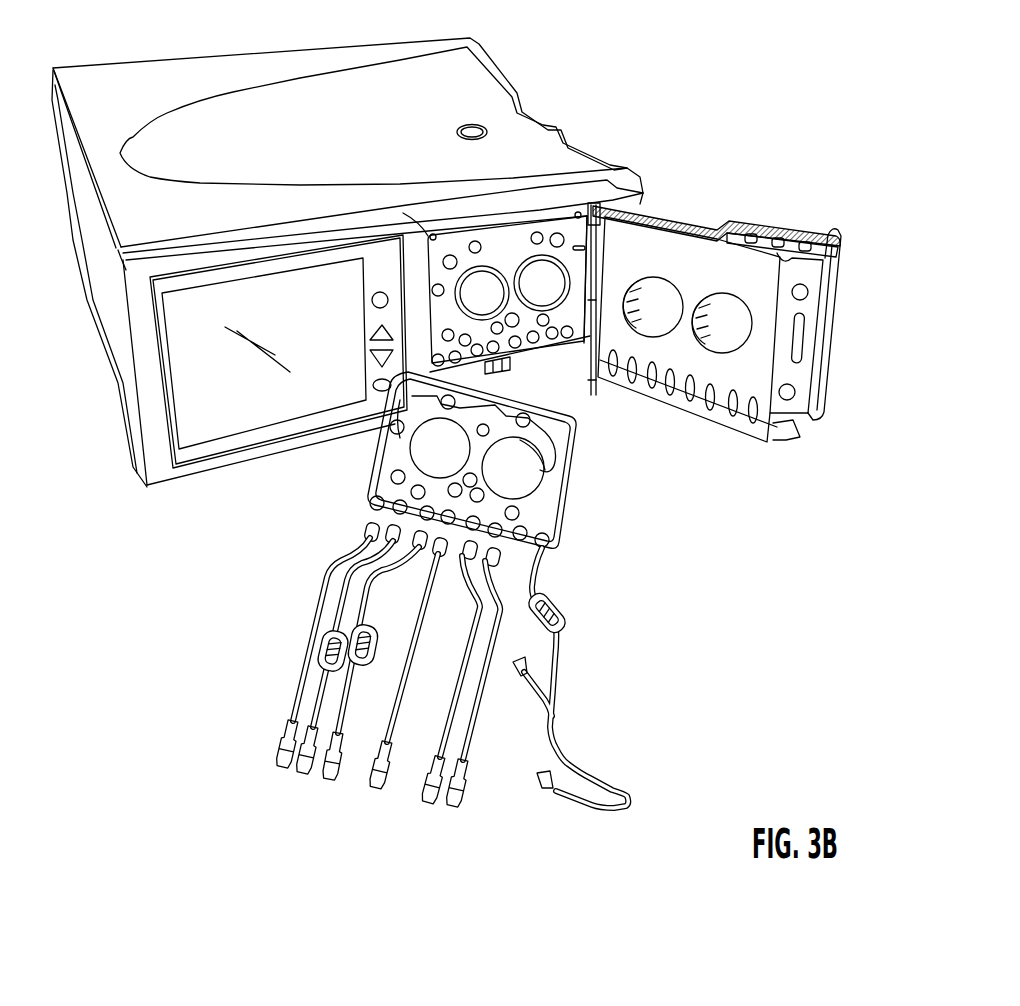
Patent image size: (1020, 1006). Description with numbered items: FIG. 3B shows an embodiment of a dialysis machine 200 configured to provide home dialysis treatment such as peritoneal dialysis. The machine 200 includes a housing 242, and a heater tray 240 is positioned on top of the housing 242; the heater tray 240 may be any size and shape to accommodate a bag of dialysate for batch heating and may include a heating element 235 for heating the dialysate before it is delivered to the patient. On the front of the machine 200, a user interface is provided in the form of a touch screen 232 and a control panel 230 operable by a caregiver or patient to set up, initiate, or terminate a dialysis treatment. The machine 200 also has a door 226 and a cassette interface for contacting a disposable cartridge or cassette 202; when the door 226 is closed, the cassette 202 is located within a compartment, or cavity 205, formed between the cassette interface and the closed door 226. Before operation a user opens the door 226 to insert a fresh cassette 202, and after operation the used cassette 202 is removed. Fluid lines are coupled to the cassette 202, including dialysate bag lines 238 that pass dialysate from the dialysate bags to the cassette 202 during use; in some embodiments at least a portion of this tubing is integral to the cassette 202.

The dialysis machine 200 is at (680, 67).
The cassette 202 is at (573, 493).
The cavity 205 is at (530, 353).
The door 226 is at (820, 327).
The control panel 230 is at (223, 494).
The touch screen 232 is at (274, 411).
The heating element 235 is at (472, 132).
The dialysate bag lines 238 is at (385, 808).
The heater tray 240 is at (401, 123).
The housing 242 is at (164, 48).